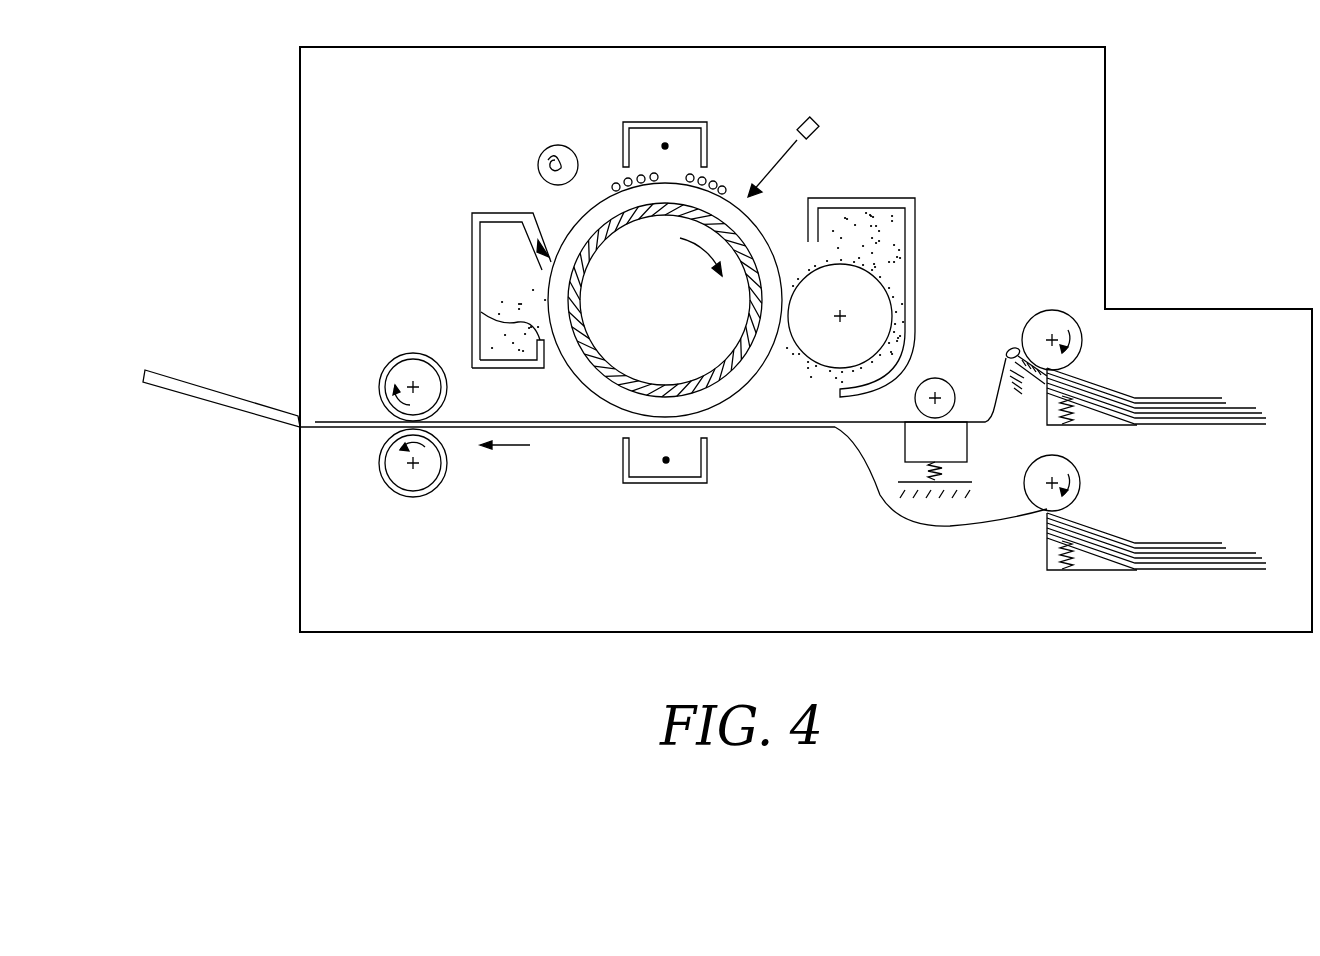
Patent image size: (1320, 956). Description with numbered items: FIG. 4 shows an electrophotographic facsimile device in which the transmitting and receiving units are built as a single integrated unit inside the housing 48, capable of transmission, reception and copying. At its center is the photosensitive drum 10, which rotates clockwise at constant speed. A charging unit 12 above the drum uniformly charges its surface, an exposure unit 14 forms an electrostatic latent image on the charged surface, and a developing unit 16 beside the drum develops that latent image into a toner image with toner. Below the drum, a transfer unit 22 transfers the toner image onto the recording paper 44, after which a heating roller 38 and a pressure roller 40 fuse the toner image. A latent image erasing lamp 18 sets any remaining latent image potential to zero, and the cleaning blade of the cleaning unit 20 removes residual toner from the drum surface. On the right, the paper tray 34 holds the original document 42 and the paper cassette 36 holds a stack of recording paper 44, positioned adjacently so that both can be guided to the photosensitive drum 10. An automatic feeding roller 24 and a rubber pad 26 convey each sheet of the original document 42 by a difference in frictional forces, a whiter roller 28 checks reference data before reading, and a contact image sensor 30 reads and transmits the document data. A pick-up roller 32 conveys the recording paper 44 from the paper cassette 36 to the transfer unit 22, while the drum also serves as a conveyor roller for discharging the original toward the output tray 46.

The photosensitive drum 10 is at (684, 311).
The charging unit 12 is at (667, 122).
The exposure unit 14 is at (810, 120).
The developing unit 16 is at (880, 300).
The latent image erasing lamp 18 is at (566, 150).
The cleaning unit 20 is at (502, 213).
The transfer unit 22 is at (707, 460).
The automatic feeding roller 24 is at (1060, 318).
The rubber pad 26 is at (1009, 346).
The whiter roller 28 is at (948, 386).
The contact image sensor 30 is at (967, 443).
The pick-up roller 32 is at (1082, 486).
The paper tray 34 is at (1200, 427).
The paper cassette 36 is at (1177, 571).
The heating roller 38 is at (386, 378).
The pressure roller 40 is at (392, 472).
The original document 42 is at (1190, 398).
The recording paper 44 is at (1186, 543).
The output tray 46 is at (205, 372).
The housing 48 is at (1262, 309).